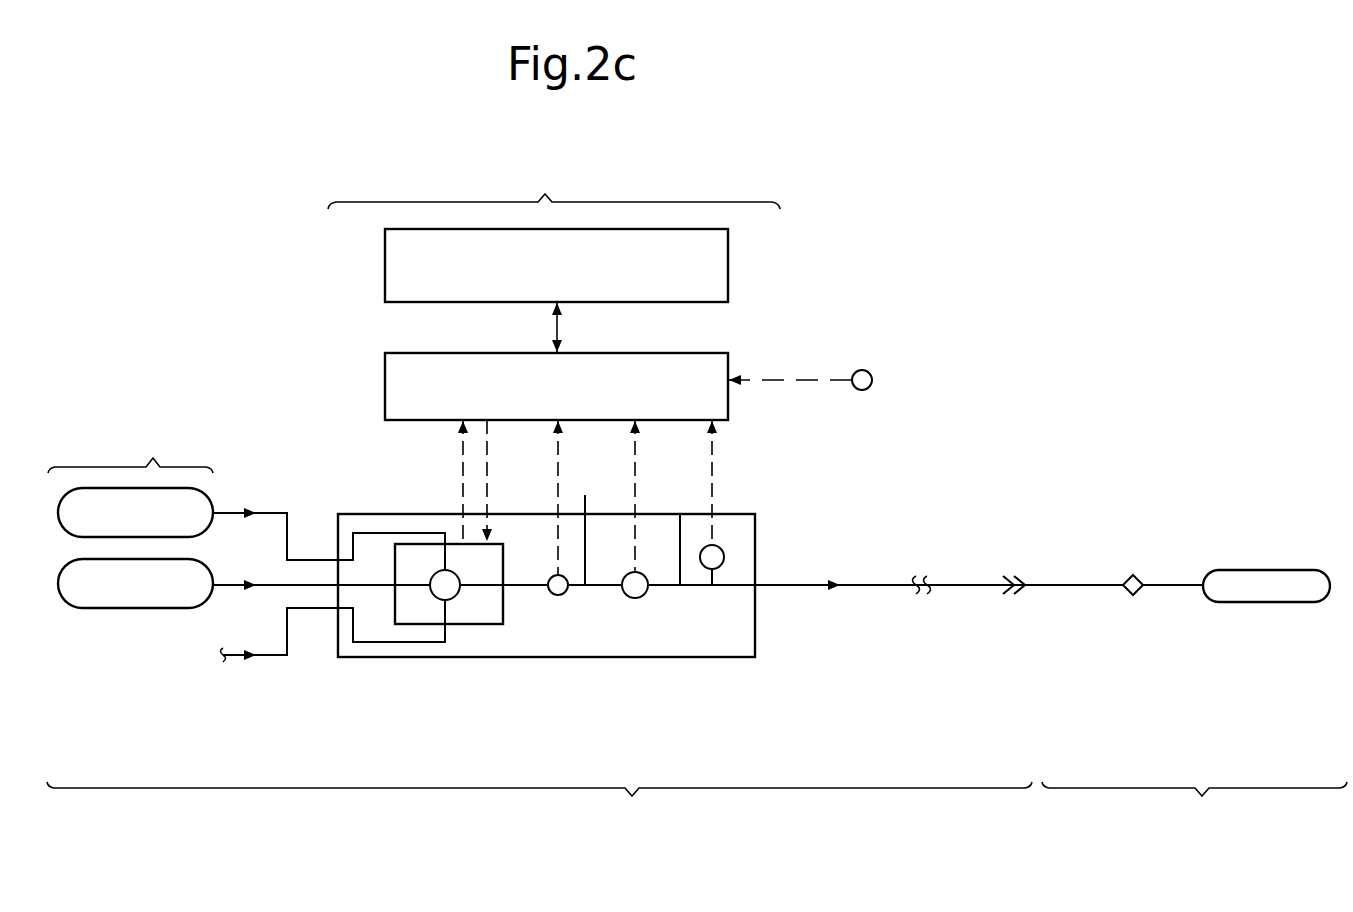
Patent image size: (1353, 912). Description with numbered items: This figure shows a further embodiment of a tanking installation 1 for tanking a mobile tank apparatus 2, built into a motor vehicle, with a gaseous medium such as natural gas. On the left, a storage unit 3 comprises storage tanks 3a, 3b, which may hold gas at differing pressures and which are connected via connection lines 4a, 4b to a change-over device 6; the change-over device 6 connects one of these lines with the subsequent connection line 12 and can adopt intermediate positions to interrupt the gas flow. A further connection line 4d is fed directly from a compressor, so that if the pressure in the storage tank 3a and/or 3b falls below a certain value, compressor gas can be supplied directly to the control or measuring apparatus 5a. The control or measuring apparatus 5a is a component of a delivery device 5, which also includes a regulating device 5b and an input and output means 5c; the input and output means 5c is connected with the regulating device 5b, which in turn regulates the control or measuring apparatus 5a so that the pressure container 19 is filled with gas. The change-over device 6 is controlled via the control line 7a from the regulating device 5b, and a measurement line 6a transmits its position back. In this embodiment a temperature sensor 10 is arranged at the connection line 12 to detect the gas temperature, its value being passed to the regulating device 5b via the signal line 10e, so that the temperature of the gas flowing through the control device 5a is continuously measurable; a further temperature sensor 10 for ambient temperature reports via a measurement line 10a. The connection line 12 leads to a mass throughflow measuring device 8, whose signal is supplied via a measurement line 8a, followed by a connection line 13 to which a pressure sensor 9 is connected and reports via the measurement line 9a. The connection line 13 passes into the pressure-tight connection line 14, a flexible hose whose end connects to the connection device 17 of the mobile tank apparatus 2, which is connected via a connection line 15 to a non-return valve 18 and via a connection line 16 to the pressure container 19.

The tanking installation 1 is at (539, 810).
The mobile tank apparatus 2 is at (1194, 811).
The storage unit 3 is at (130, 444).
The storage tank 3a is at (142, 532).
The storage tank 3b is at (142, 603).
The connection line 4a is at (270, 510).
The connection line 4b is at (270, 582).
The connection line 4d is at (275, 653).
The delivery device 5 is at (554, 180).
The control or measuring apparatus 5a is at (563, 657).
The regulating device 5b is at (578, 408).
The input and output means 5c is at (560, 282).
The change-over device 6 is at (490, 612).
The measurement line 6a is at (462, 460).
The control line 7a is at (490, 450).
The mass throughflow measuring device 8 is at (639, 594).
The measurement line 8a is at (637, 468).
The pressure sensor 9 is at (722, 550).
The measurement line 9a is at (713, 460).
The temperature sensor 10 is at (563, 593).
The measurement line 10a is at (810, 380).
The signal line 10e is at (560, 453).
The connection line 12 is at (586, 523).
The connection line 13 is at (681, 531).
The pressure-tight connection line 14 is at (888, 585).
The connection line 15 is at (1068, 585).
The connection line 16 is at (1173, 585).
The connection device 17 is at (1022, 593).
The non-return valve 18 is at (1137, 597).
The pressure container 19 is at (1265, 590).